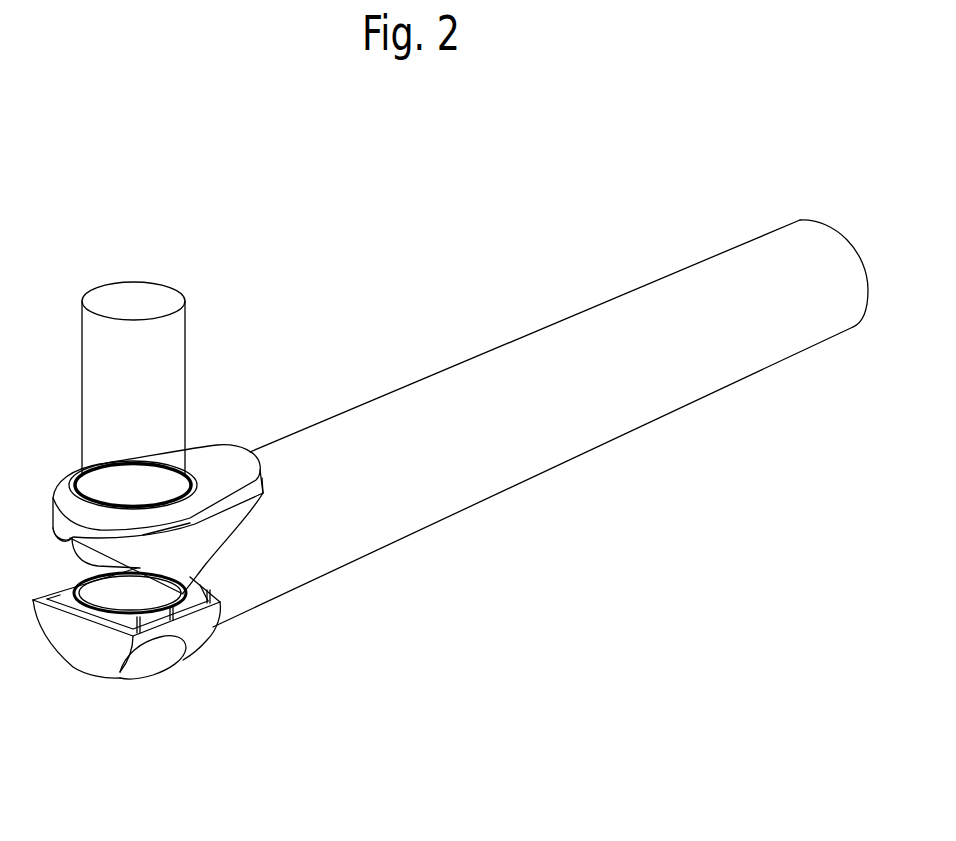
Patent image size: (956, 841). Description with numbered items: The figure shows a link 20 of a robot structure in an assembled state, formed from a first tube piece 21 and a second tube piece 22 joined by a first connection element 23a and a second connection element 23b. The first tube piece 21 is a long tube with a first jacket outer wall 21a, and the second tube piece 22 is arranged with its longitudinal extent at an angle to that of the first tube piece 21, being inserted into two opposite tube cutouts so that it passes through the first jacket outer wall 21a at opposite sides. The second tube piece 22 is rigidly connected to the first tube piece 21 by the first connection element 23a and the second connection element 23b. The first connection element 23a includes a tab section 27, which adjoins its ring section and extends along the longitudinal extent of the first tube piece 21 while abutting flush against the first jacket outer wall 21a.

The link 20 is at (553, 215).
The first tube piece 21 is at (680, 268).
The first jacket outer wall 21a is at (431, 400).
The second tube piece 22 is at (170, 282).
The first connection element 23a is at (238, 446).
The second connection element 23b is at (105, 679).
The tab section 27 is at (265, 495).